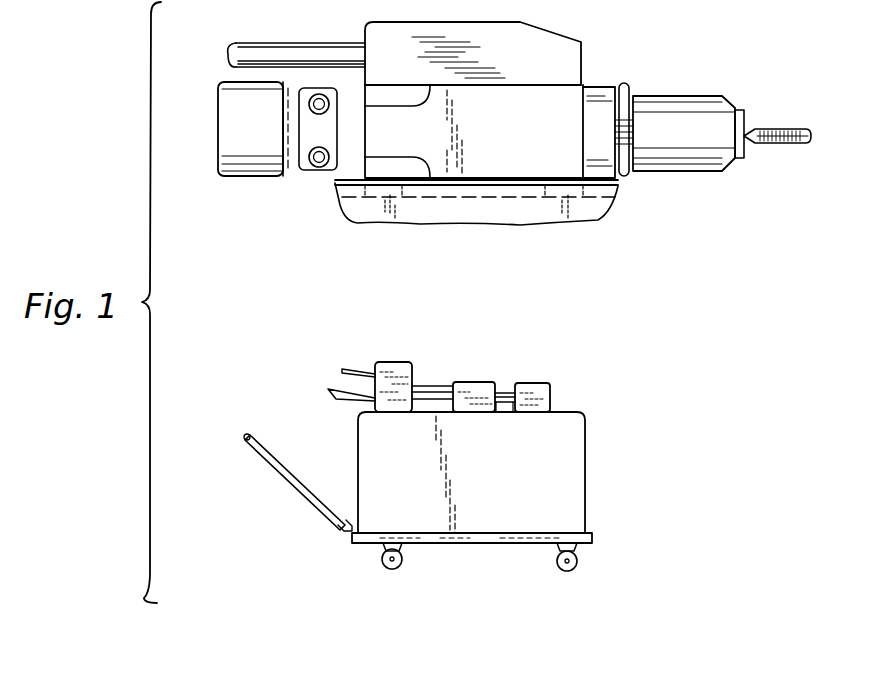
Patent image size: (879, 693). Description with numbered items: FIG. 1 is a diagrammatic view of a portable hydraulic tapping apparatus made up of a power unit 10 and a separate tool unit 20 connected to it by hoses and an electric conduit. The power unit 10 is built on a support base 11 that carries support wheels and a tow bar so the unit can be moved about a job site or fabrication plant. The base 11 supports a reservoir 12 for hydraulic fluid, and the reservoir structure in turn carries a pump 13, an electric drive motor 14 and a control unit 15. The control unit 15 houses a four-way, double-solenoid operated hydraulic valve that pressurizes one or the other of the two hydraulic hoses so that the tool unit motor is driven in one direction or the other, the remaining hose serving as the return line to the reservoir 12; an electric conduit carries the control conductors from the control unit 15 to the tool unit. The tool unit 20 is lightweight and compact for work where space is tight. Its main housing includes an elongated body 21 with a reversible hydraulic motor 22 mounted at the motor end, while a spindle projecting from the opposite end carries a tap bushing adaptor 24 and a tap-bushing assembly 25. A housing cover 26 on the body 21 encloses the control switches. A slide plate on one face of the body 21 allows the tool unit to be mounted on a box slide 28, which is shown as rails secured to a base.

The power unit 10 is at (595, 405).
The support base 11 is at (503, 538).
The reservoir 12 is at (572, 477).
The pump 13 is at (472, 388).
The electric drive motor 14 is at (532, 390).
The control unit 15 is at (402, 366).
The tool unit 20 is at (573, 33).
The elongated body 21 is at (563, 100).
The reversible hydraulic motor 22 is at (231, 140).
The tap bushing adaptor 24 is at (690, 113).
The tap-bushing assembly 25 is at (768, 130).
The housing cover 26 is at (393, 34).
The box slide 28 is at (597, 217).